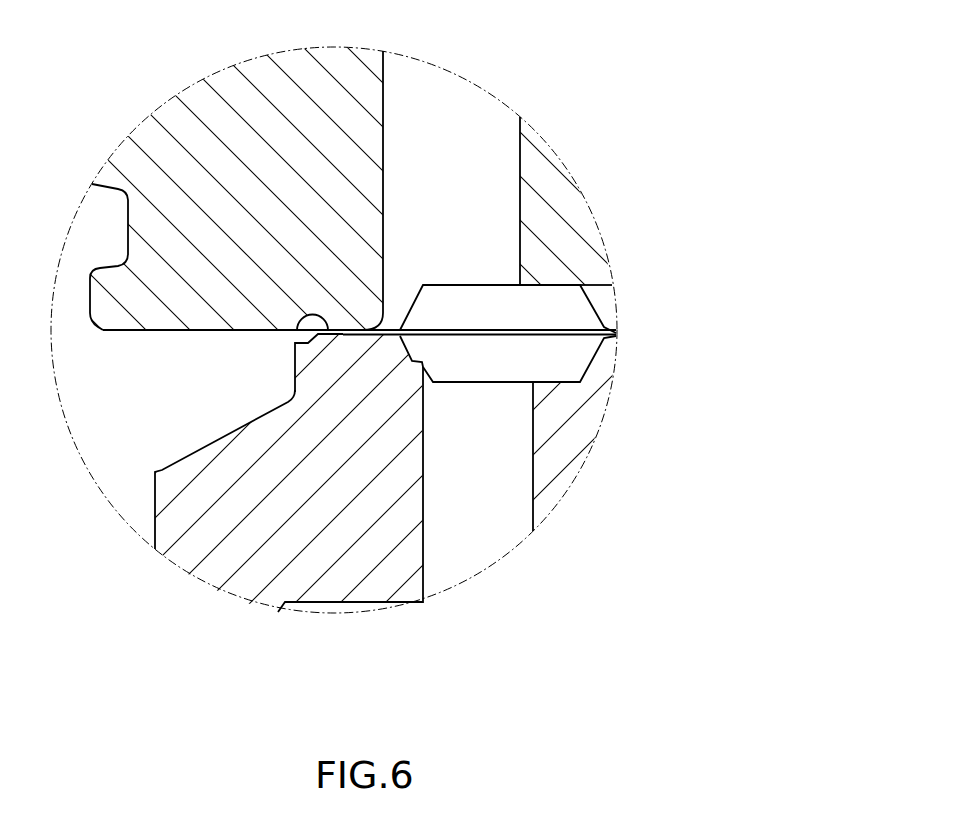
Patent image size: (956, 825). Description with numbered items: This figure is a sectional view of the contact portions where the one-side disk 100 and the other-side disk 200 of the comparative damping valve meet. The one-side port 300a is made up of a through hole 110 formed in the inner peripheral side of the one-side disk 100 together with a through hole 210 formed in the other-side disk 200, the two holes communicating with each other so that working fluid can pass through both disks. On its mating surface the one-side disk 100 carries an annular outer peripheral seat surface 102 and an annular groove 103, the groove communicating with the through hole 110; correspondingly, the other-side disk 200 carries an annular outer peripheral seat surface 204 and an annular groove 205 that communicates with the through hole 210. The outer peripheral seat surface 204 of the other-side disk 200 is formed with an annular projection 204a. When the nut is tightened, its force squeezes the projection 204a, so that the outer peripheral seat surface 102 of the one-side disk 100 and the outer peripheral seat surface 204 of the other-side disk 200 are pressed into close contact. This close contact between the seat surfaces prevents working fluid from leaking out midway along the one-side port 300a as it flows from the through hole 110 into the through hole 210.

The one-side disk 100 is at (152, 147).
The outer peripheral seat surface 102 is at (220, 331).
The annular groove 103 is at (588, 310).
The through hole 110 is at (460, 107).
The other-side disk 200 is at (157, 500).
The outer peripheral seat surface 204 is at (290, 346).
The annular projection 204a is at (340, 328).
The annular groove 205 is at (586, 363).
The through hole 210 is at (487, 520).
The one-side port 300a is at (505, 188).